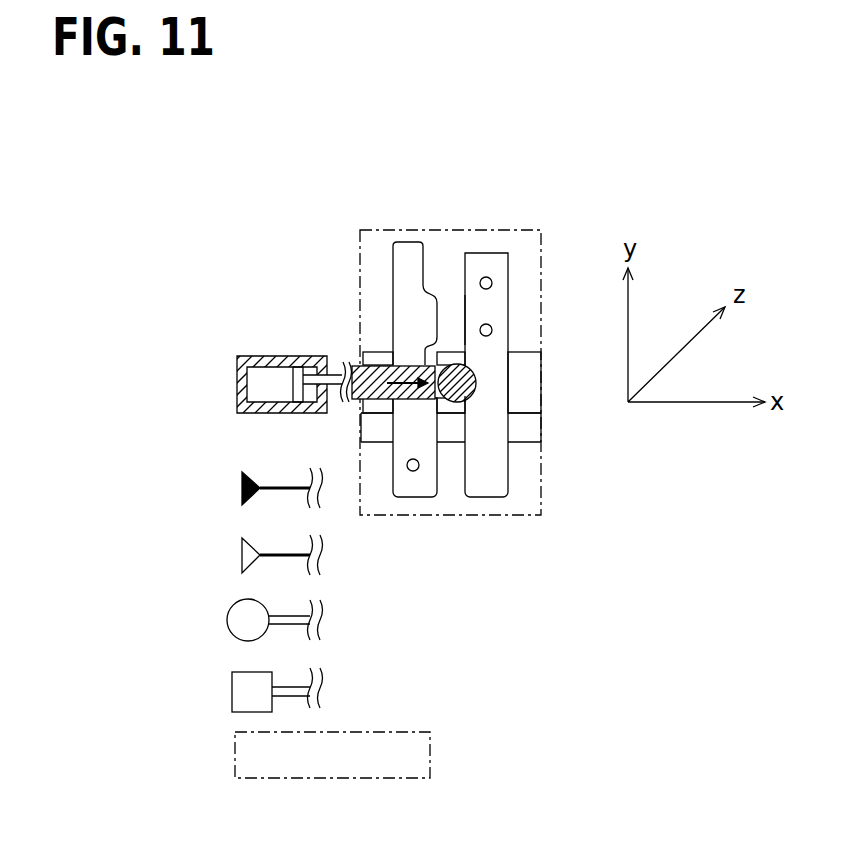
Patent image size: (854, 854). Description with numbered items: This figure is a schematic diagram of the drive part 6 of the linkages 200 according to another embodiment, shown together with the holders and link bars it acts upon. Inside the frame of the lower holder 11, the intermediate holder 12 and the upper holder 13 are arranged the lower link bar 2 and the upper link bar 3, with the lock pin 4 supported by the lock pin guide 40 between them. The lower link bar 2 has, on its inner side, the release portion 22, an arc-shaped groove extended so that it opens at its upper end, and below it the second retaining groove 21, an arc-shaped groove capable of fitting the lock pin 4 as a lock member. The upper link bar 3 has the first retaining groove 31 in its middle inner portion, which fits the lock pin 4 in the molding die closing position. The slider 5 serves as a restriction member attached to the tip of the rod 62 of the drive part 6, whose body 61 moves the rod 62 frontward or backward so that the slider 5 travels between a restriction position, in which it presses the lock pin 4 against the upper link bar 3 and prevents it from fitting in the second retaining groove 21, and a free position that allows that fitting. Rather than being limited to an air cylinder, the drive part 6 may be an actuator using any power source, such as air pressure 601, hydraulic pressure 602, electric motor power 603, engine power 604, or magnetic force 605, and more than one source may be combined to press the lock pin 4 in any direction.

The linkages 200 is at (452, 168).
The lower holder 11 is at (527, 480).
The intermediate holder 12 is at (525, 423).
The upper holder 13 is at (378, 257).
The release portion 22 is at (424, 292).
The upper link bar 3 is at (487, 263).
The second retaining groove 21 is at (427, 348).
The first retaining groove 31 is at (455, 403).
The lock pin guide 40 is at (528, 377).
The lower link bar 2 is at (417, 487).
The slider 5 is at (374, 354).
The lock pin 4 is at (448, 402).
The drive part 6 is at (280, 336).
The body 61 is at (238, 378).
The rod 62 is at (334, 383).
The air pressure 601 is at (242, 491).
The hydraulic pressure 602 is at (242, 556).
The electric motor power 603 is at (227, 621).
The engine power 604 is at (232, 692).
The magnetic force 605 is at (235, 758).